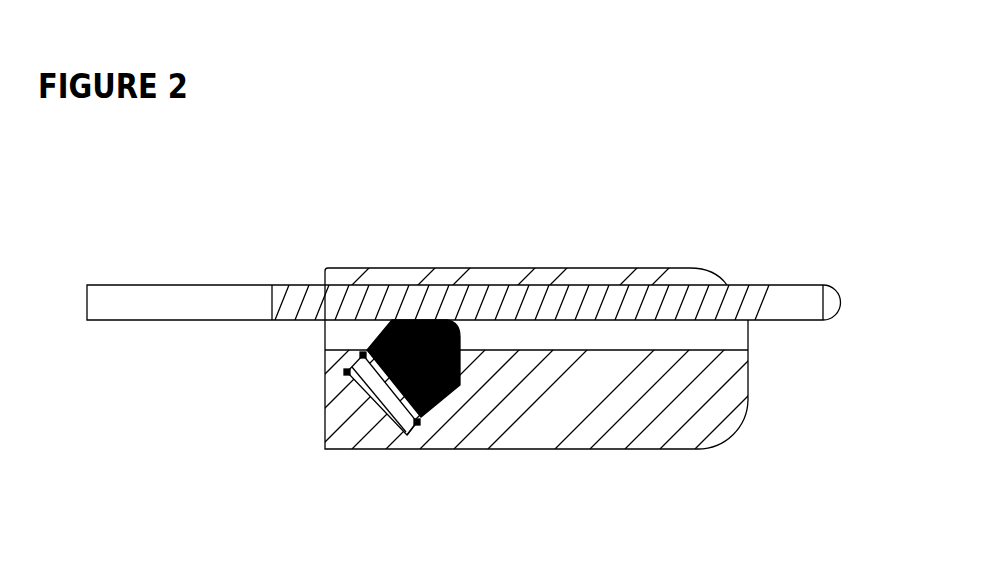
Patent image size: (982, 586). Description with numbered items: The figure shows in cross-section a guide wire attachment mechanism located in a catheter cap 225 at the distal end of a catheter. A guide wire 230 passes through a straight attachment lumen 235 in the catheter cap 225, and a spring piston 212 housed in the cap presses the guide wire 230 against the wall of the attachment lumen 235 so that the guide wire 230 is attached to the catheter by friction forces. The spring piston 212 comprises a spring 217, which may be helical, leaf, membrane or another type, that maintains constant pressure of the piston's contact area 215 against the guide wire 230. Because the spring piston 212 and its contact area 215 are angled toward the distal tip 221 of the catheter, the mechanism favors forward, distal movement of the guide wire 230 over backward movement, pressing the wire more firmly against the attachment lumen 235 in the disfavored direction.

The spring piston 212 is at (435, 417).
The contact area 215 is at (452, 387).
The spring 217 is at (395, 415).
The distal tip 221 is at (748, 415).
The catheter cap 225 is at (638, 413).
The guide wire 230 is at (208, 302).
The attachment lumen 235 is at (582, 338).